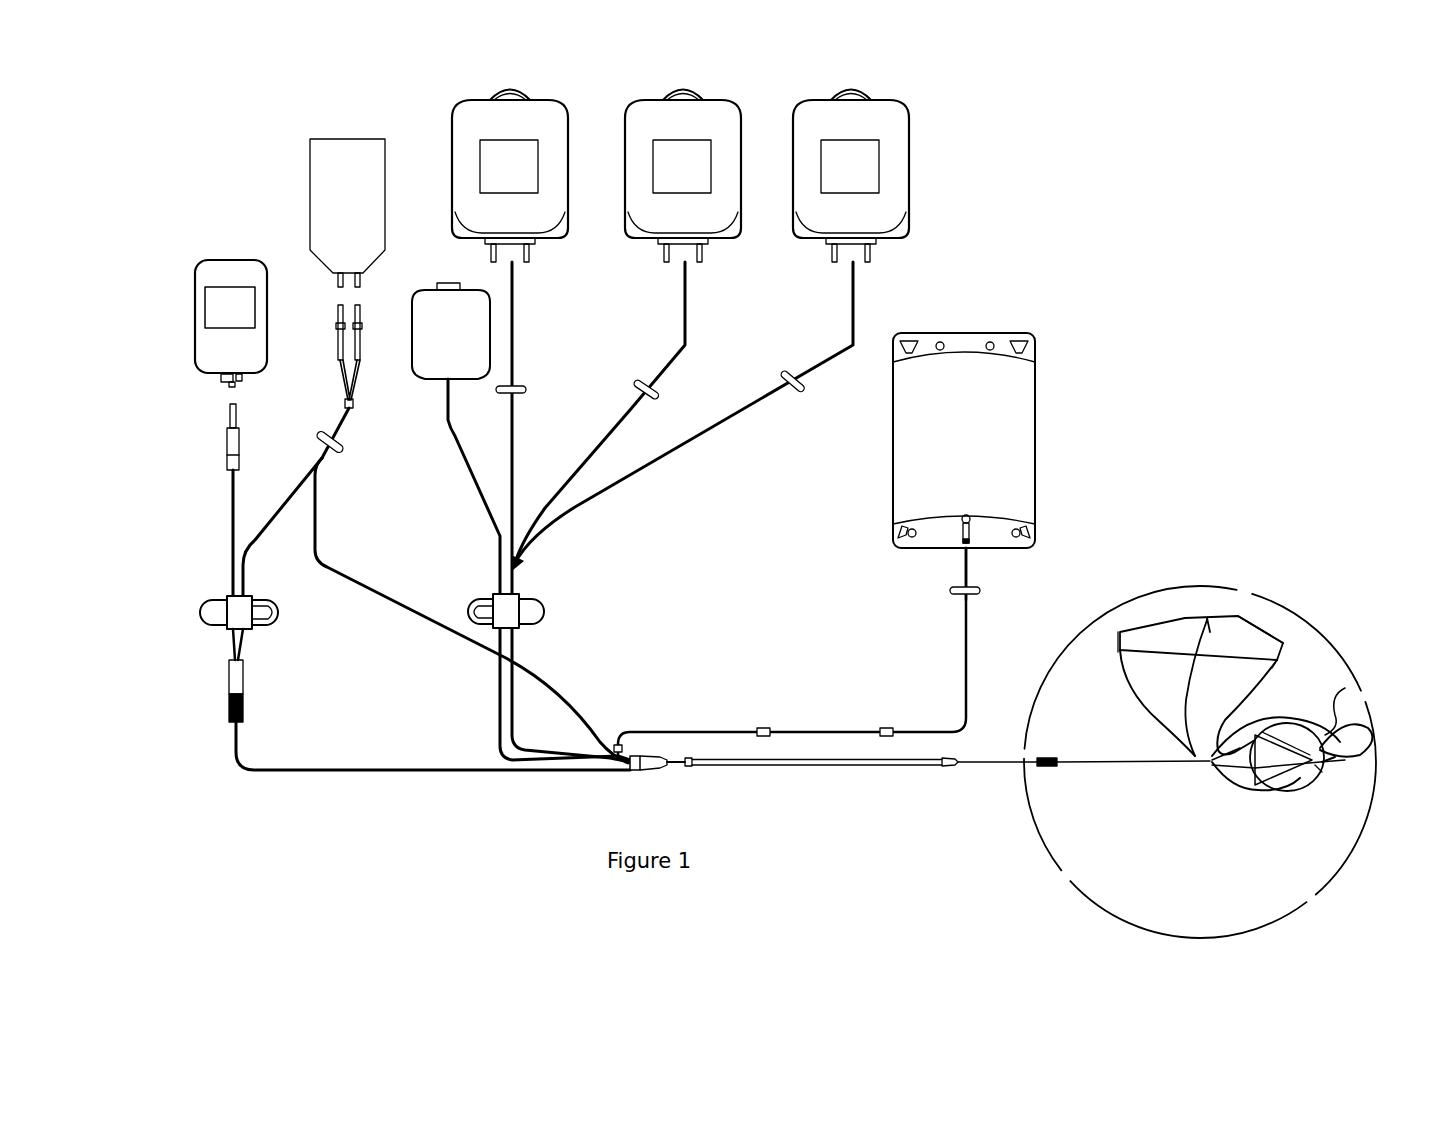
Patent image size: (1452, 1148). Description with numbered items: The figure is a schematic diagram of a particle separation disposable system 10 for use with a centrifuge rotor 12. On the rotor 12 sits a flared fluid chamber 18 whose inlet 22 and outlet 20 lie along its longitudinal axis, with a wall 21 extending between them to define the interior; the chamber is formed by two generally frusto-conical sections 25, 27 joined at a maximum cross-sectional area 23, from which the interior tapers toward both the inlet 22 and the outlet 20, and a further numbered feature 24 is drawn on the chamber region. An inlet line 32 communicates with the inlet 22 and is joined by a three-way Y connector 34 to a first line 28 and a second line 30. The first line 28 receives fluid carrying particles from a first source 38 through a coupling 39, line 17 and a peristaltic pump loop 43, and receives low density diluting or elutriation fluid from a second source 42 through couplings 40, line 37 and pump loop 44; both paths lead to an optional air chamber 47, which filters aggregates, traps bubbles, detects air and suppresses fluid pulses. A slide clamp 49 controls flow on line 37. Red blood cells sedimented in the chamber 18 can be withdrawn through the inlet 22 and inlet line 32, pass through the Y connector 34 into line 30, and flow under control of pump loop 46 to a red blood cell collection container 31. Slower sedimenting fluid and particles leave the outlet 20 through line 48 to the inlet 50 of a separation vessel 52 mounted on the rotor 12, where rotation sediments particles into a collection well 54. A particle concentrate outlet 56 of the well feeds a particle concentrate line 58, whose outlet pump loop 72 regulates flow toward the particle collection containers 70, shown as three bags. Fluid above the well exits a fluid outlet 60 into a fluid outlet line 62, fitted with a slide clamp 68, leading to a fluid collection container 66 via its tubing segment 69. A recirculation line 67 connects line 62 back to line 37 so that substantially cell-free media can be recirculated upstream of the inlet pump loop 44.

The particle separation disposable system 10 is at (1095, 262).
The centrifuge rotor 12 is at (1100, 902).
The line 17 is at (231, 515).
The fluid chamber 18 is at (1345, 690).
The outlet 20 is at (1262, 756).
The wall 21 is at (1293, 778).
The inlet 22 is at (1320, 770).
The maximum cross-sectional area 23 is at (1255, 787).
The tubing loop 24 is at (1252, 778).
The frusto-conical shaped section 25 is at (1254, 770).
The frusto-conical shaped section 27 is at (1280, 770).
The first line 28 is at (375, 773).
The second line 30 is at (478, 497).
The red blood cell collection container 31 is at (420, 296).
The inlet line 32 is at (1372, 740).
The Y connector 34 is at (1333, 760).
The line 37 is at (350, 425).
The first source 38 is at (195, 293).
The coupling 39 is at (227, 450).
The couplings 40 is at (338, 338).
The second source 42 is at (310, 163).
The peristaltic pump loop 43 is at (200, 614).
The pump loop 44 is at (268, 630).
The pump loop 46 is at (470, 604).
The air chamber 47 is at (228, 683).
The line 48 is at (1242, 694).
The slide clamp 49 is at (320, 438).
The inlet 50 is at (1277, 660).
The separation vessel 52 is at (1258, 625).
The collection well 54 is at (1190, 618).
The particle concentrate outlet 56 is at (1215, 630).
The particle concentrate line 58 is at (517, 712).
The fluid outlet 60 is at (1120, 649).
The fluid outlet line 62 is at (622, 768).
The fluid collection container 66 is at (932, 466).
The recirculation line 67 is at (422, 622).
The slide clamp 68 is at (950, 597).
The tubing 69 is at (968, 577).
The particle collection containers 70 is at (465, 103).
The outlet pump loop 72 is at (548, 609).